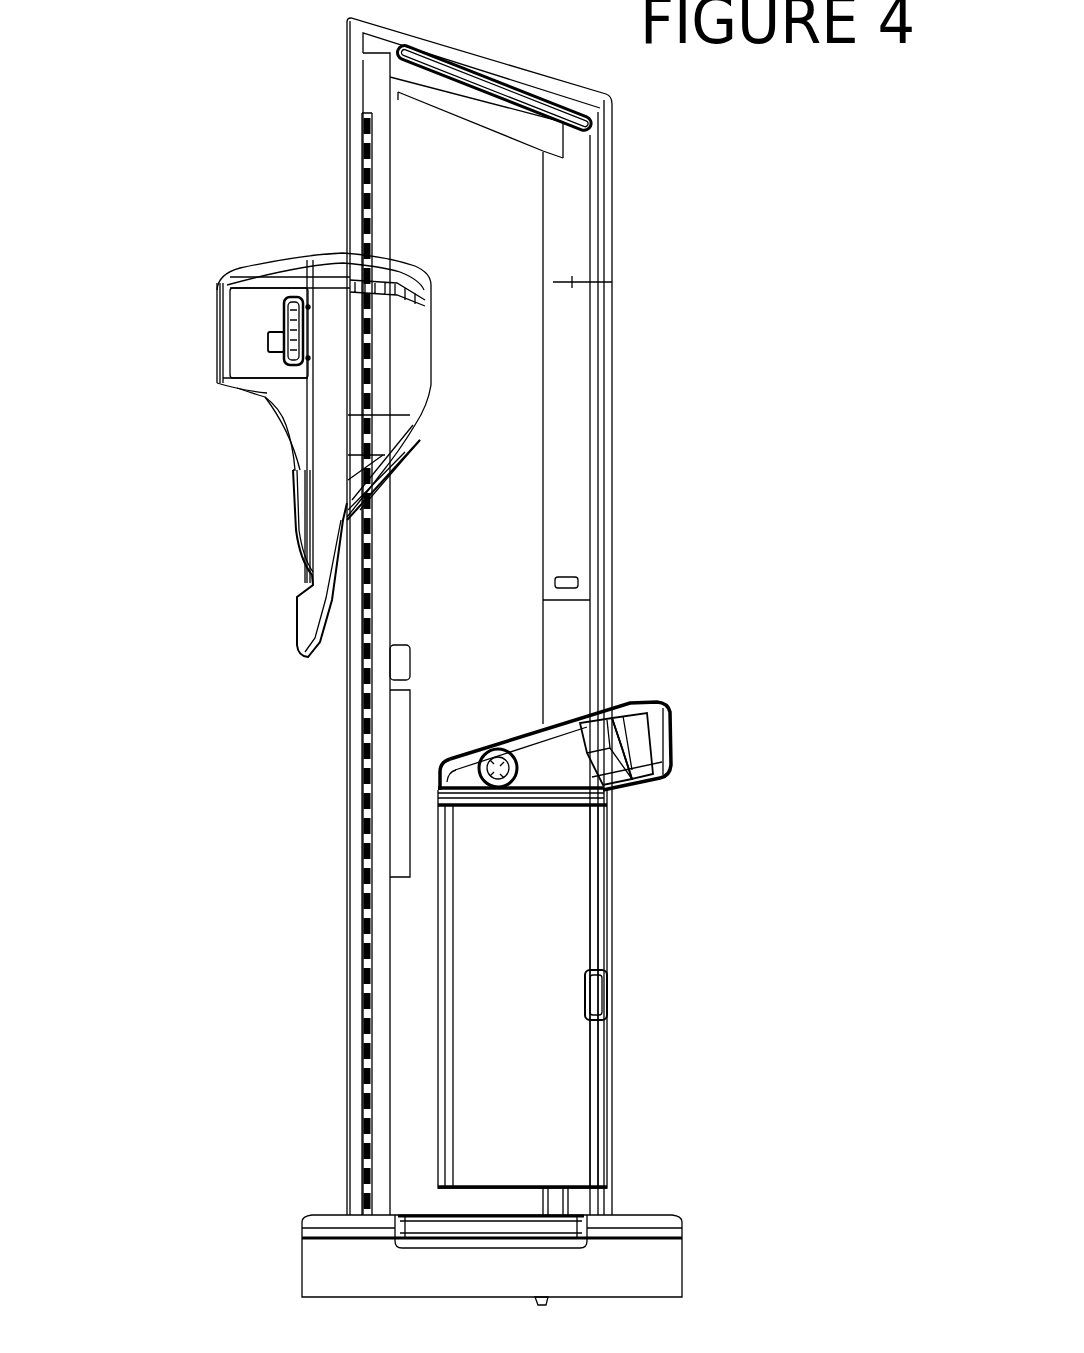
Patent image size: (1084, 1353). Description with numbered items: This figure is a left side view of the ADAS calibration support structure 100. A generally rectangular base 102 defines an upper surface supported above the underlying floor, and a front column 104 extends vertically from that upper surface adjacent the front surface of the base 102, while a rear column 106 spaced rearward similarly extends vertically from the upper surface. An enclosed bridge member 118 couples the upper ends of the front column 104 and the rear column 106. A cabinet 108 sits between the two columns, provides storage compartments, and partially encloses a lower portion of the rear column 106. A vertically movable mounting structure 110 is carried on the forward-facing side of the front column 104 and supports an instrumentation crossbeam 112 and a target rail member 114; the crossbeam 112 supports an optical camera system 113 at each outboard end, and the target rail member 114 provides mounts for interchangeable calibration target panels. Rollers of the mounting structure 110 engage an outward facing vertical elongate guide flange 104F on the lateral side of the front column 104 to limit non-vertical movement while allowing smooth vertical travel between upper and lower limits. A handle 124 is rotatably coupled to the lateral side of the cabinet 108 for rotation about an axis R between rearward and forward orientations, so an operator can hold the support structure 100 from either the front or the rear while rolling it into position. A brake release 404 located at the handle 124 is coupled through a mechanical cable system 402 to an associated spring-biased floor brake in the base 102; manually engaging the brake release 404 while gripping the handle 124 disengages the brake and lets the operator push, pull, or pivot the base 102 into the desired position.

The ADAS calibration support structure 100 is at (752, 394).
The base 102 is at (686, 1210).
The front column 104 is at (346, 160).
The vertical elongate guide flange 104F is at (355, 985).
The rear column 106 is at (612, 226).
The cabinet 108 is at (545, 926).
The mounting structure 110 is at (330, 406).
The instrumentation crossbeam 112 is at (256, 306).
The optical camera system 113 is at (260, 345).
The target rail member 114 is at (290, 641).
The bridge member 118 is at (470, 82).
The handle 124 is at (680, 740).
The mechanical cable system 402 is at (600, 746).
The brake release 404 is at (634, 744).
The axis R is at (498, 760).